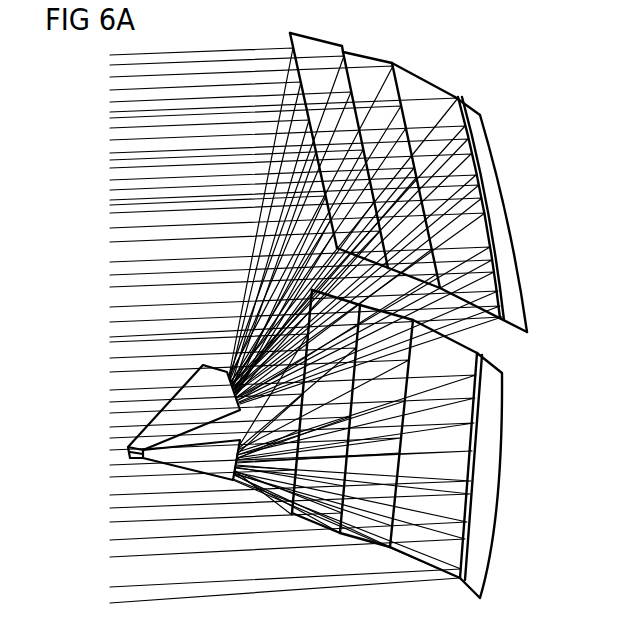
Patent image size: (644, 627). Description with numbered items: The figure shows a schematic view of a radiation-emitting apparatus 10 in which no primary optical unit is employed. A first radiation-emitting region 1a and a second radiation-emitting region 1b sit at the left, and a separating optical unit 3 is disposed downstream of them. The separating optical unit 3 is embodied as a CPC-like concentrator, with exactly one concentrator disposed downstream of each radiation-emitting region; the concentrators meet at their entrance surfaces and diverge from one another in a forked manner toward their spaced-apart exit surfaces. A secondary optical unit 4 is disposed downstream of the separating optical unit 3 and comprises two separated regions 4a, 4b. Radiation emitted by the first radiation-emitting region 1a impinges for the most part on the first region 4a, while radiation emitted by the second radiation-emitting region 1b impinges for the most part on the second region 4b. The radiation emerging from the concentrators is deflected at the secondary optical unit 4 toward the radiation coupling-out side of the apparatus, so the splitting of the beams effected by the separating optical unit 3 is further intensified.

The radiation-emitting apparatus 10 is at (513, 86).
The secondary optical unit 4 is at (412, 73).
The first region of the secondary optical unit 4a is at (483, 470).
The second region of the secondary optical unit 4b is at (490, 181).
The separating optical unit 3 is at (172, 406).
The first radiation-emitting region 1a is at (128, 452).
The second radiation-emitting region 1b is at (136, 453).